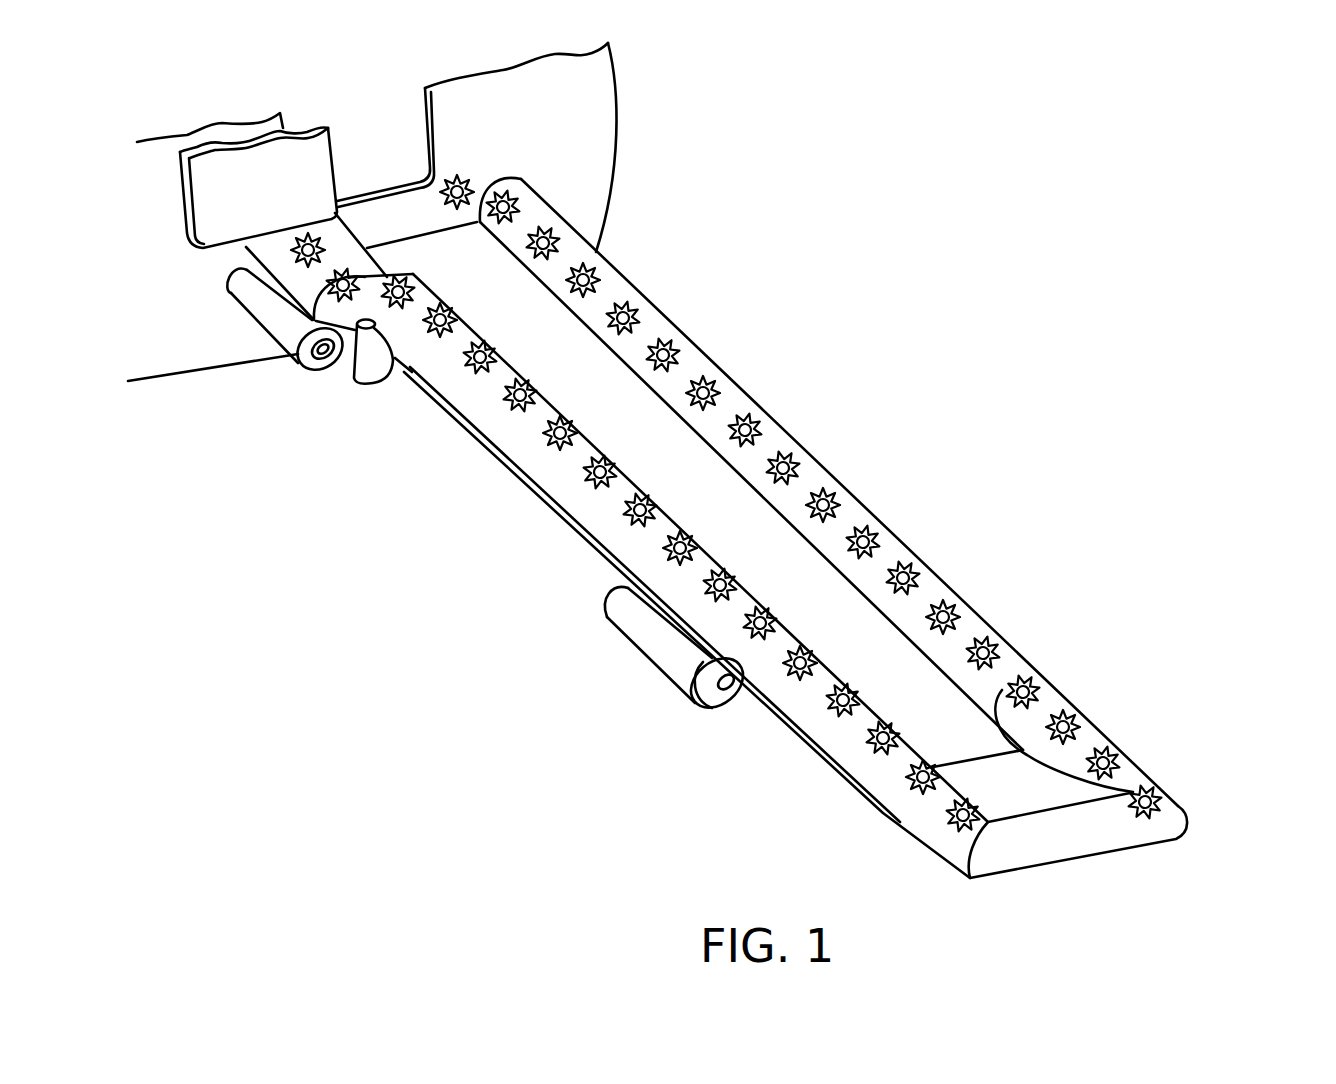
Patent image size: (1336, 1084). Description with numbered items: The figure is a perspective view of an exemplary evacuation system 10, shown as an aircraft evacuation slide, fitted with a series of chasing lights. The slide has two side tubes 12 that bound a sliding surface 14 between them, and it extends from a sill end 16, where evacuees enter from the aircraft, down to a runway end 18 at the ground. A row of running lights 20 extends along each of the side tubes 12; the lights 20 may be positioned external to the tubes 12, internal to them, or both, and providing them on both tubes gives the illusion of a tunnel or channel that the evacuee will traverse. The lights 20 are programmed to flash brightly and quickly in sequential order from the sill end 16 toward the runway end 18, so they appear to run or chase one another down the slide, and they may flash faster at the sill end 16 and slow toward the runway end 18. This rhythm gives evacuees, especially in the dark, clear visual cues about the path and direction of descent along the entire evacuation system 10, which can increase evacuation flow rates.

The evacuation system 10 is at (661, 170).
The side tubes 12 is at (700, 350).
The sliding surface 14 is at (836, 620).
The sill end 16 is at (388, 187).
The runway end 18 is at (1182, 820).
The running lights 20 is at (907, 562).